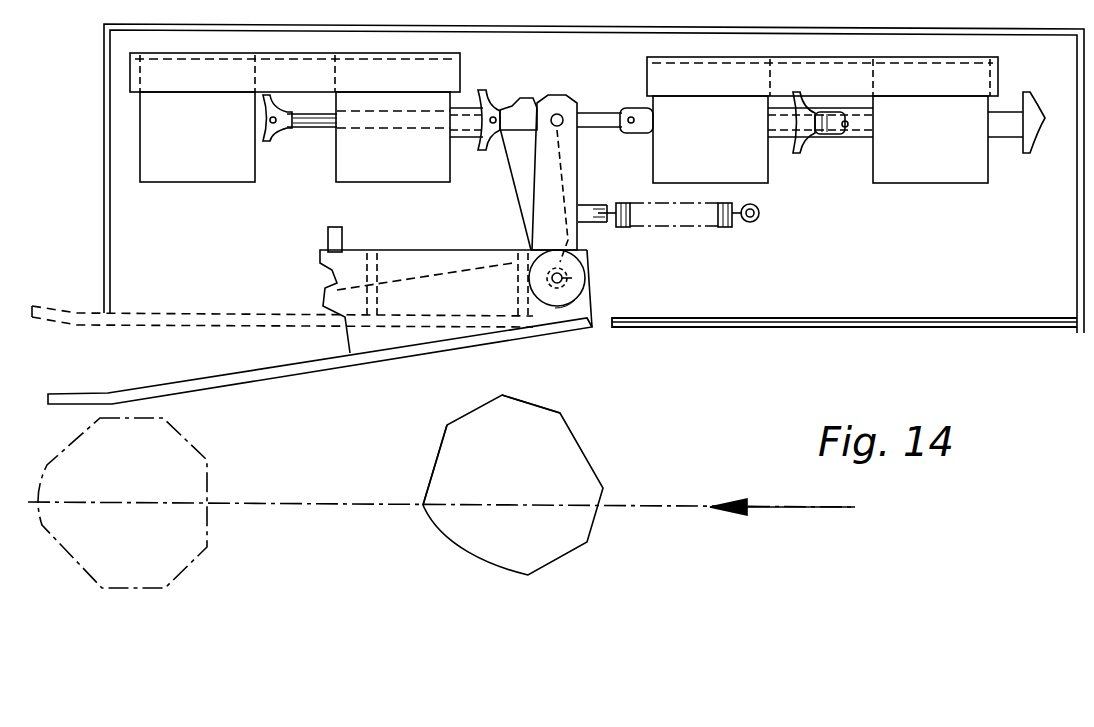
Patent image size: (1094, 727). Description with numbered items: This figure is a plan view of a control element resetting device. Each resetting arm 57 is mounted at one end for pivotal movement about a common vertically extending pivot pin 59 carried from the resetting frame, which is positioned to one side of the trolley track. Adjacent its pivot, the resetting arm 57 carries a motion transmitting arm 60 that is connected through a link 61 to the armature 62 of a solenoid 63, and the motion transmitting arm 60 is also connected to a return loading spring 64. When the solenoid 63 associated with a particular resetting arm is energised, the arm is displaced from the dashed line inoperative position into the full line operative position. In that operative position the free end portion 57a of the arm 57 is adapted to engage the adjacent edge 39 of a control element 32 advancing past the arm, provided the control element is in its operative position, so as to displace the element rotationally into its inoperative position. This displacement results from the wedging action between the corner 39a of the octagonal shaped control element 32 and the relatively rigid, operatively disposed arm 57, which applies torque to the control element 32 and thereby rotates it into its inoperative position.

The control element 32 is at (173, 563).
The adjacent edge 39 is at (502, 395).
The corner 39a is at (447, 425).
The resetting arm 57 is at (222, 322).
The free end portion 57a is at (75, 393).
The pivot pin 59 is at (598, 278).
The motion transmitting arm 60 is at (573, 182).
The link 61 is at (313, 125).
The armature 62 is at (258, 142).
The solenoid 63 is at (199, 174).
The return loading spring 64 is at (676, 222).